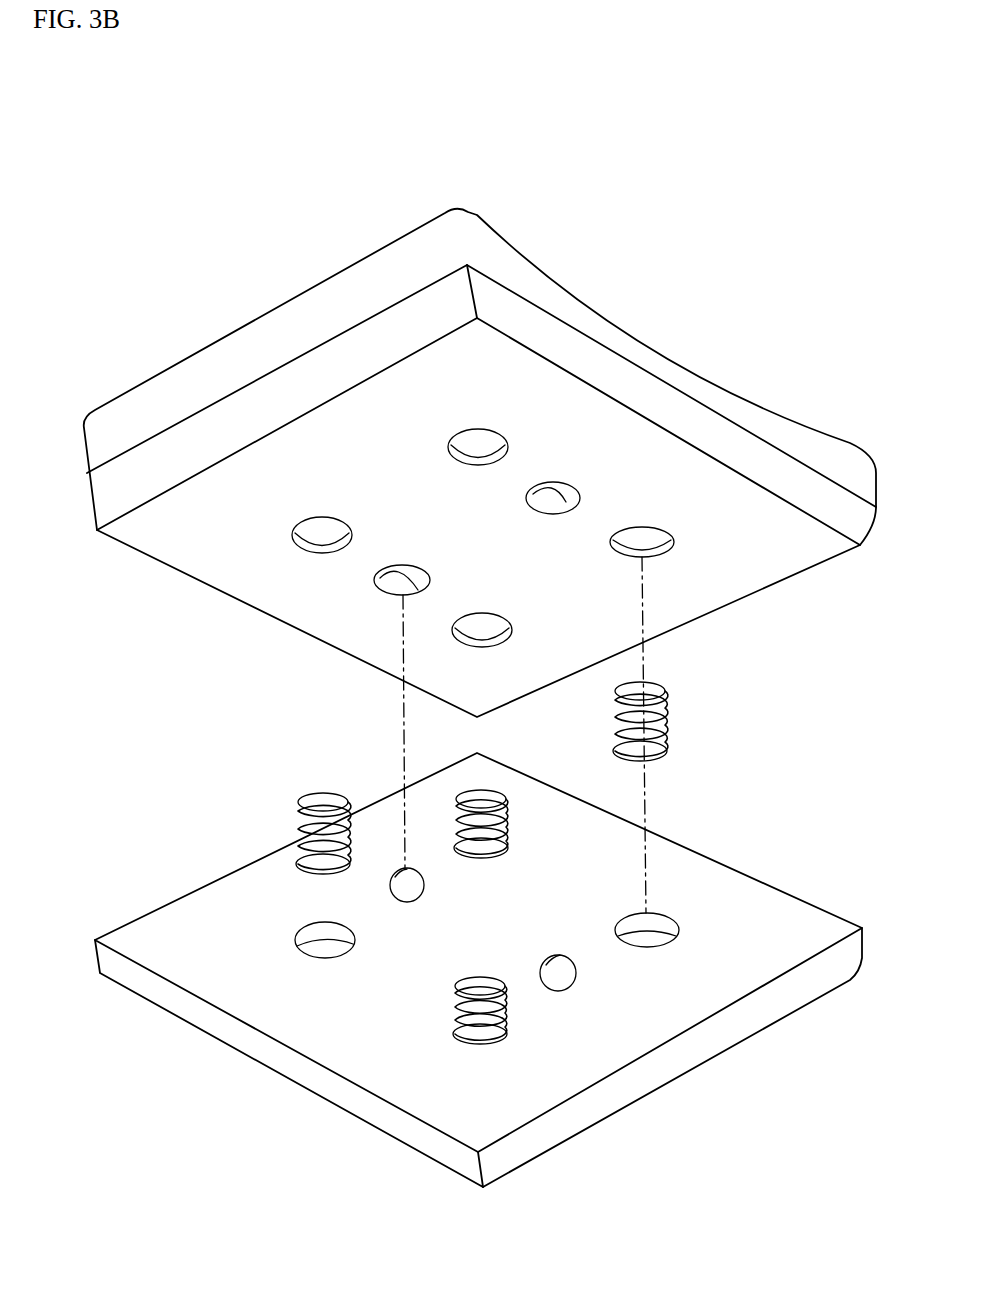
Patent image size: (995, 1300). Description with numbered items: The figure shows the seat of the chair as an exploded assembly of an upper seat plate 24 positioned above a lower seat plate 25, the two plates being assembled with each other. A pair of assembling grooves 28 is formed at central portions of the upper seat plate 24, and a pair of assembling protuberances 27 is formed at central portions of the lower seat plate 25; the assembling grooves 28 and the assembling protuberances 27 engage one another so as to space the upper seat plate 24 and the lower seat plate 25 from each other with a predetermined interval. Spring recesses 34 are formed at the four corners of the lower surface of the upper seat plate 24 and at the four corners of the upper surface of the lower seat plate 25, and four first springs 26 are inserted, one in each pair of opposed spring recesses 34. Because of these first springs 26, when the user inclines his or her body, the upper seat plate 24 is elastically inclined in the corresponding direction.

The upper seat plate 24 is at (722, 390).
The lower seat plate 25 is at (780, 910).
The first spring 26 is at (665, 720).
The assembling protuberance 27 is at (405, 873).
The assembling groove 28 is at (390, 587).
The spring recess 34 is at (673, 918).